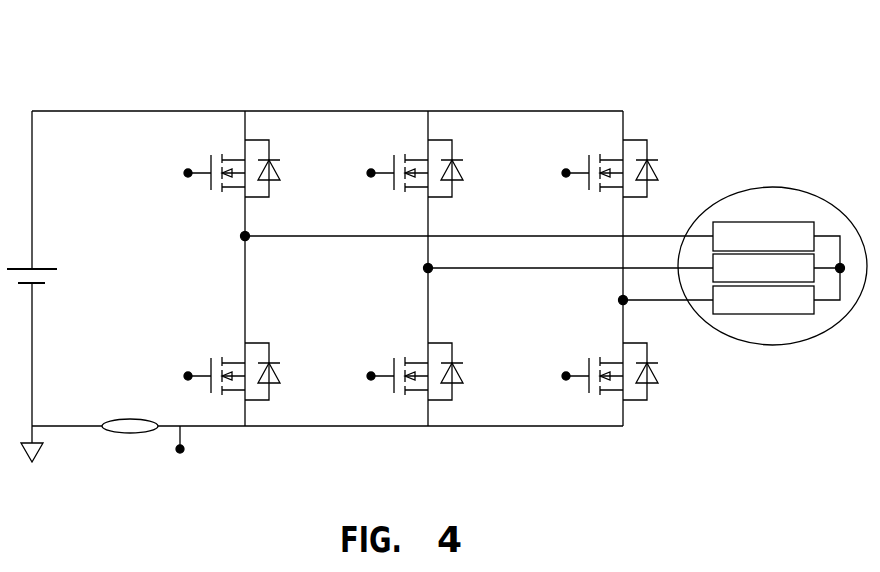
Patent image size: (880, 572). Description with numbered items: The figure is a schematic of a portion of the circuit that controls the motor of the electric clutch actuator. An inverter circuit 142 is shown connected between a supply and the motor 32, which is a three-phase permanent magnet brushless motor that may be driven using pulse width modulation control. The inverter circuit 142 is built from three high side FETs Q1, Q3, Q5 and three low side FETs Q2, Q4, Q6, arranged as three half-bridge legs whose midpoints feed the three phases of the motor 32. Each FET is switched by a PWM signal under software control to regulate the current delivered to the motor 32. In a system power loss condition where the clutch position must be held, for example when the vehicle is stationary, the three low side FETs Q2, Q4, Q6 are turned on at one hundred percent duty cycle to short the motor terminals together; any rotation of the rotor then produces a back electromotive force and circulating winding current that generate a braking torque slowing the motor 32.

The inverter circuit 142 is at (360, 248).
The motor 32 is at (765, 187).
The high side FET Q1 is at (244, 179).
The low side FET Q2 is at (245, 381).
The high side FET Q3 is at (427, 179).
The low side FET Q4 is at (427, 381).
The high side FET Q5 is at (623, 179).
The low side FET Q6 is at (623, 381).